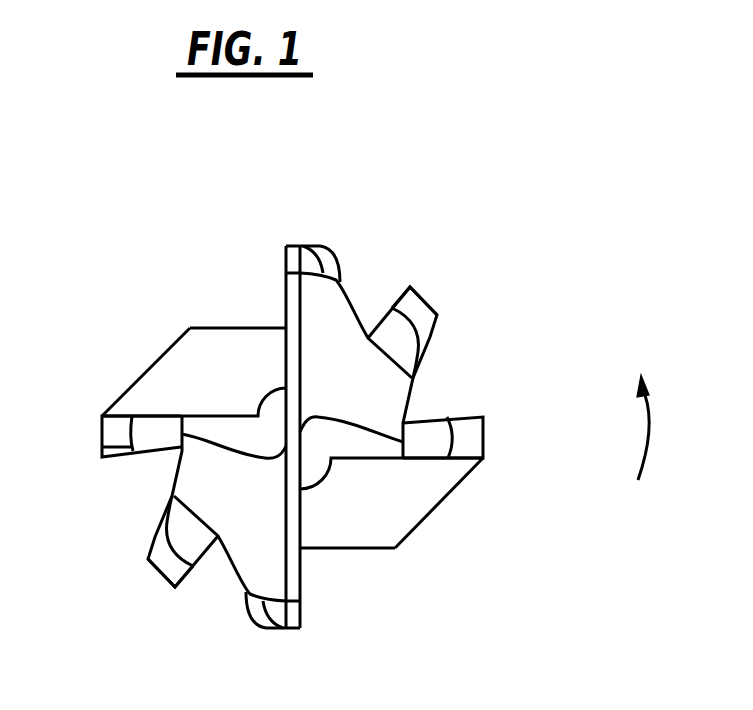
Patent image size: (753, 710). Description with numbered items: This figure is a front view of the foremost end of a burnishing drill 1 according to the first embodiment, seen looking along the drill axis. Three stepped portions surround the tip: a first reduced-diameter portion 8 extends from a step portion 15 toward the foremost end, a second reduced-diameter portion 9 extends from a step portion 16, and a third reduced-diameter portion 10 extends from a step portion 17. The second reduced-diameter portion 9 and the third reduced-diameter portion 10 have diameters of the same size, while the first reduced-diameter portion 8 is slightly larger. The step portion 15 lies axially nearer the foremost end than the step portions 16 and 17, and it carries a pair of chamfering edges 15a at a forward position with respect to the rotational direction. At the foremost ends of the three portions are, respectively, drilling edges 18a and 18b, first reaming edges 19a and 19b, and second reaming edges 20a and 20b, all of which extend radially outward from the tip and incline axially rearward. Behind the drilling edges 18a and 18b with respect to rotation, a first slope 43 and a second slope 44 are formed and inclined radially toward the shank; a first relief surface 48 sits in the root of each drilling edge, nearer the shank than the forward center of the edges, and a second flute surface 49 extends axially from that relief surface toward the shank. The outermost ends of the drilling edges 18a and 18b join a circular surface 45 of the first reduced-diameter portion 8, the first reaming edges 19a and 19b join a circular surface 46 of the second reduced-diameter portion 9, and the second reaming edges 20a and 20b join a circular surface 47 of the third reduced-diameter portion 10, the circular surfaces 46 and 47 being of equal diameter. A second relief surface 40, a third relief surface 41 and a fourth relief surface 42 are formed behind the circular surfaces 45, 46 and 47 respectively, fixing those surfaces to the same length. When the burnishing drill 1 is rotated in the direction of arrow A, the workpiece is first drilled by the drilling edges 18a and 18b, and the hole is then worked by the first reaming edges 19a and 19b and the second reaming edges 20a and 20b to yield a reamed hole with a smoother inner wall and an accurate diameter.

The burnishing drill 1 is at (200, 298).
The first reduced-diameter portion 8 is at (325, 302).
The second reduced-diameter portion 9 is at (413, 352).
The third reduced-diameter portion 10 is at (148, 416).
The step portion 15 is at (291, 246).
The chamfering edges 15a is at (285, 282).
The step portion 16 is at (431, 340).
The step portion 17 is at (450, 450).
The drilling edge 18a is at (285, 292).
The drilling edge 18b is at (300, 578).
The first reaming edge 19a is at (412, 287).
The first reaming edge 19b is at (205, 560).
The second reaming edge 20a is at (442, 420).
The second reaming edge 20b is at (143, 457).
The second relief surface 40 is at (329, 298).
The third relief surface 41 is at (442, 315).
The fourth relief surface 42 is at (483, 460).
The first slope 43 is at (300, 338).
The second slope 44 is at (365, 320).
The circular surface 45 is at (314, 246).
The circular surface 46 is at (433, 305).
The circular surface 47 is at (452, 432).
The first relief surface 48 is at (323, 442).
The second flute surface 49 is at (190, 351).
The rotational direction arrow A is at (657, 433).